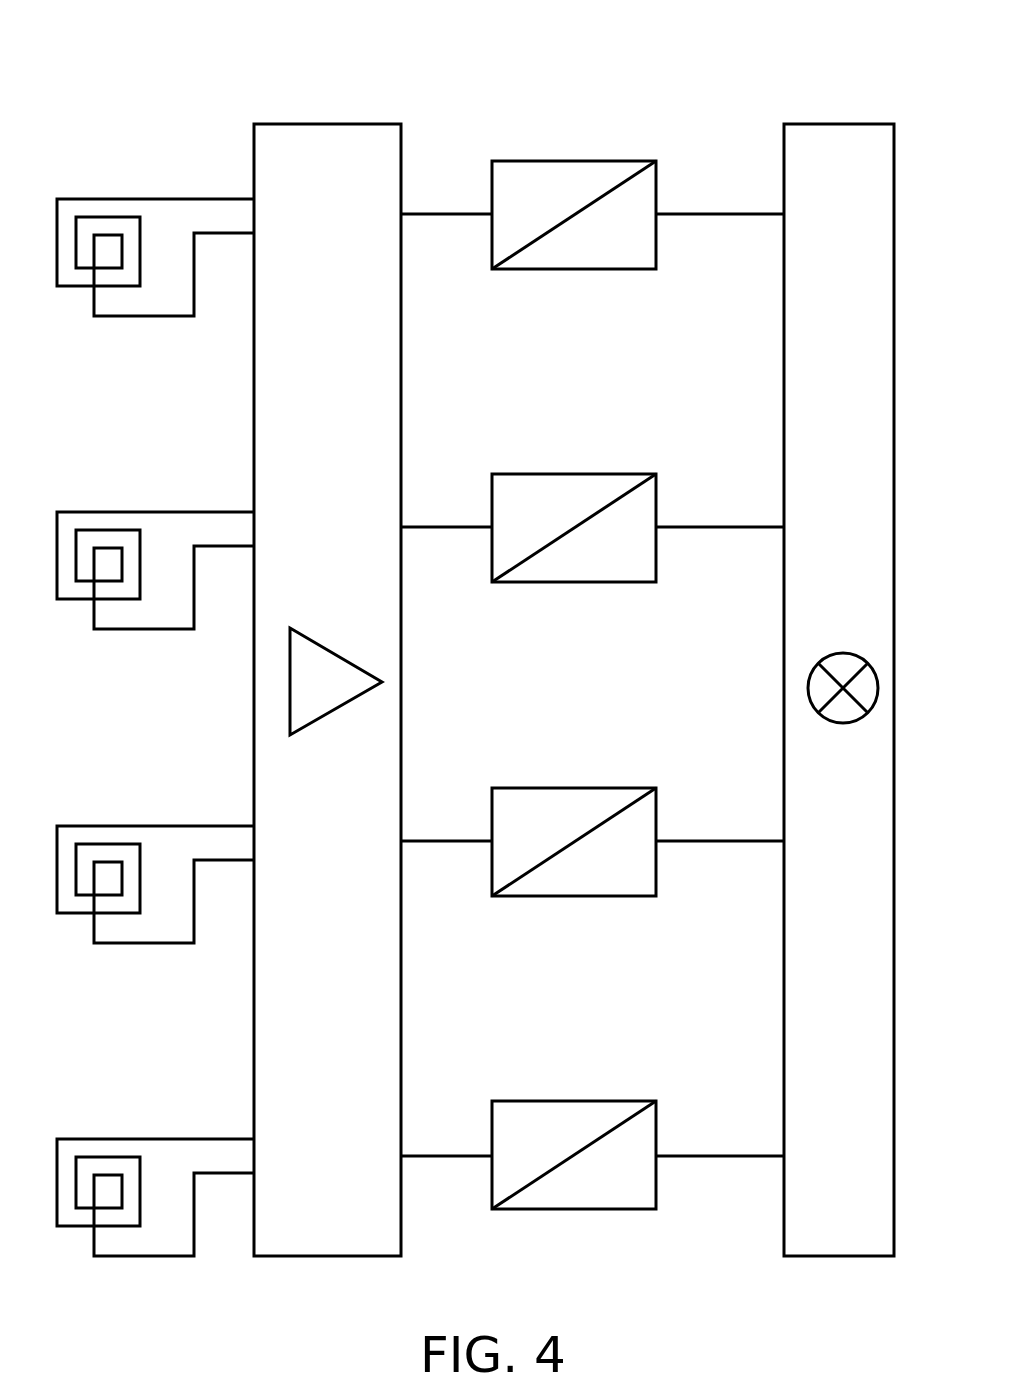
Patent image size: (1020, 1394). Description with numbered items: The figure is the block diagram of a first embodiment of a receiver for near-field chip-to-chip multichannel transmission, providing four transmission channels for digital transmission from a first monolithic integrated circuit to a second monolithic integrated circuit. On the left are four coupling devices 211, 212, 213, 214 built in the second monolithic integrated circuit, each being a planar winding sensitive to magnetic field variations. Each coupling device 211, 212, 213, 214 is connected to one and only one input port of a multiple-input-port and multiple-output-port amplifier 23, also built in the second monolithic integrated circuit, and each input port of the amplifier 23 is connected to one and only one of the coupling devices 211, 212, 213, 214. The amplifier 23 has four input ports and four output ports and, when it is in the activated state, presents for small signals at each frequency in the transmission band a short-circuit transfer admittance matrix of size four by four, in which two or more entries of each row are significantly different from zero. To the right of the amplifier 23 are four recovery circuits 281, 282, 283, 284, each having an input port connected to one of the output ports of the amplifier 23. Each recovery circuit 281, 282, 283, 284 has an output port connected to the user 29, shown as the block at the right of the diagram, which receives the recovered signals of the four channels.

The multiple-input-port and multiple-output-port amplifier 23 is at (409, 112).
The user 29 is at (840, 112).
The coupling device 211 is at (97, 187).
The coupling device 212 is at (97, 500).
The coupling device 213 is at (97, 814).
The coupling device 214 is at (97, 1127).
The recovery circuit 281 is at (575, 148).
The recovery circuit 282 is at (575, 461).
The recovery circuit 283 is at (575, 775).
The recovery circuit 284 is at (575, 1088).